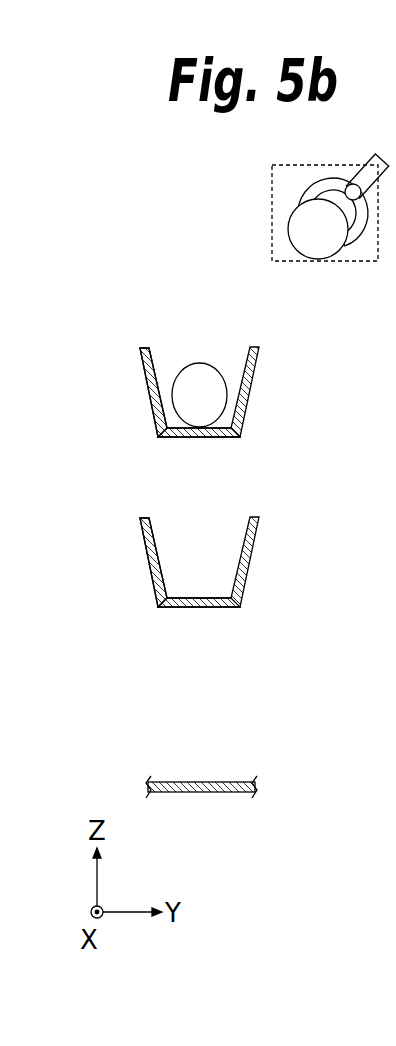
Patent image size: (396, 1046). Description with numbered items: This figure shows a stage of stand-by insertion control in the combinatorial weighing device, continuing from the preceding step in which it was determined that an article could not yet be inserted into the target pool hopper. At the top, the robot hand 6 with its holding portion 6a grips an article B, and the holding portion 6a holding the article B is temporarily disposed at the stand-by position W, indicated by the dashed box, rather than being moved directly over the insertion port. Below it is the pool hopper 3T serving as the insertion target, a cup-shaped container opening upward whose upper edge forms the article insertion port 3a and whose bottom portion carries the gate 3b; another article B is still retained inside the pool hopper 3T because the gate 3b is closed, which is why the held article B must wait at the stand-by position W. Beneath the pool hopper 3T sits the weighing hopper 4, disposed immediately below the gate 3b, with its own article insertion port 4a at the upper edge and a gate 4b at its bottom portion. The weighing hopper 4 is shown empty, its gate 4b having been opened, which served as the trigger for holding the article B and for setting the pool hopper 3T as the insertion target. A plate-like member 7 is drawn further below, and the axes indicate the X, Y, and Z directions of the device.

The stand-by position W is at (272, 203).
The robot hand 6 is at (360, 156).
The holding portion 6a is at (317, 180).
The article B is at (310, 239).
The pool hopper serving as insertion target 3T is at (151, 408).
The article insertion port 3a is at (150, 348).
The gate 3b is at (188, 437).
The weighing hopper 4 is at (153, 585).
The article insertion port 4a is at (150, 515).
The gate 4b is at (188, 607).
The plate 7 is at (162, 782).